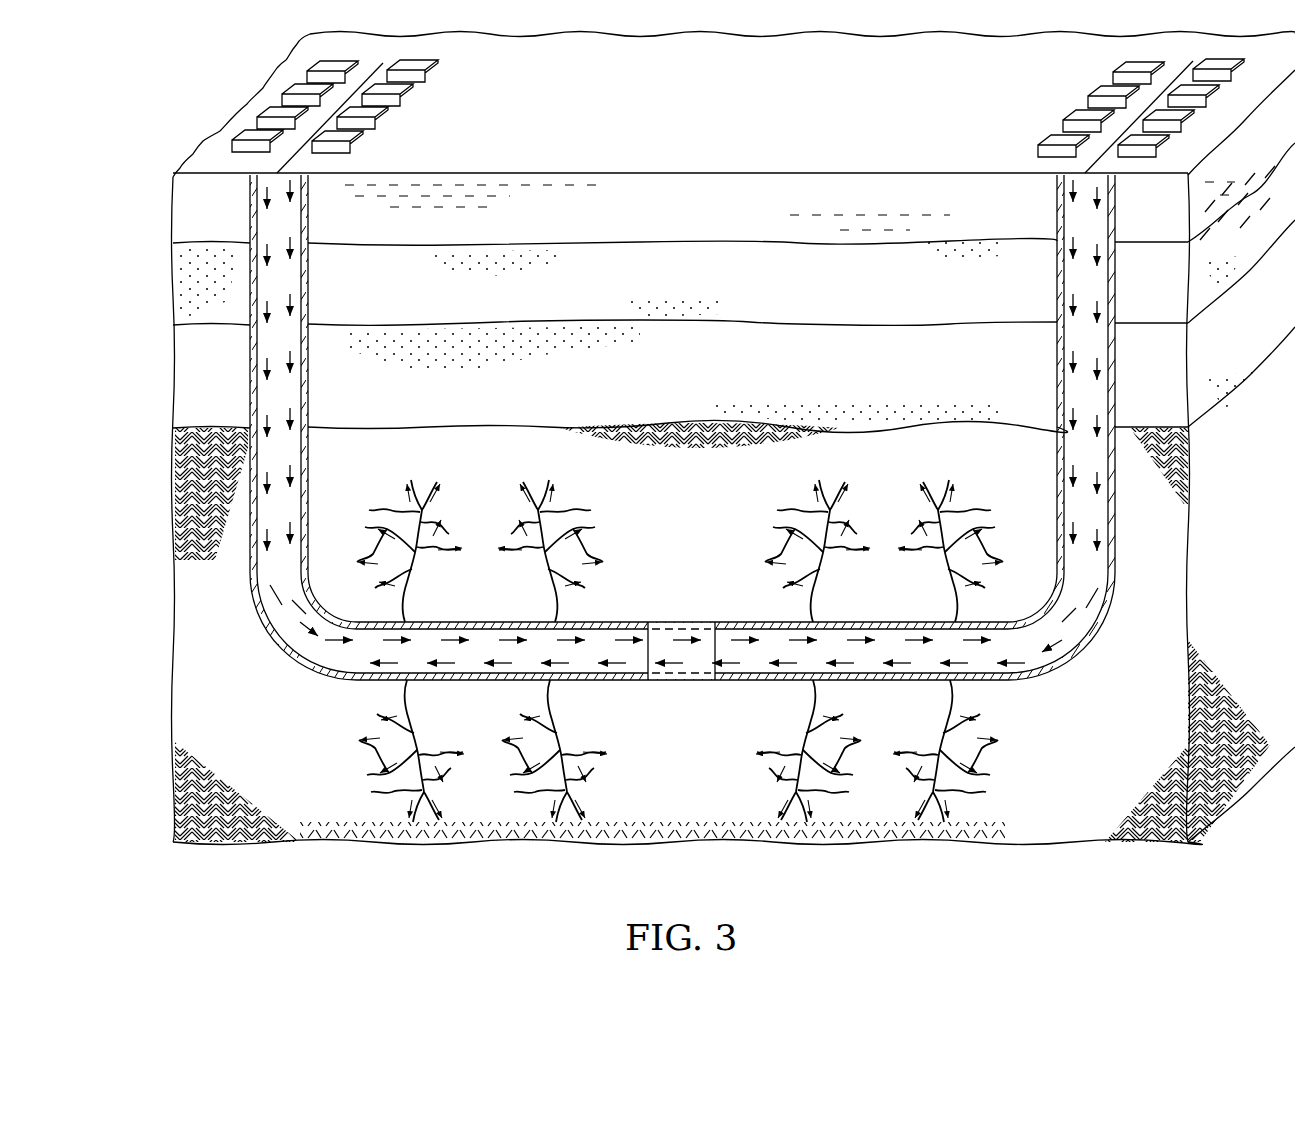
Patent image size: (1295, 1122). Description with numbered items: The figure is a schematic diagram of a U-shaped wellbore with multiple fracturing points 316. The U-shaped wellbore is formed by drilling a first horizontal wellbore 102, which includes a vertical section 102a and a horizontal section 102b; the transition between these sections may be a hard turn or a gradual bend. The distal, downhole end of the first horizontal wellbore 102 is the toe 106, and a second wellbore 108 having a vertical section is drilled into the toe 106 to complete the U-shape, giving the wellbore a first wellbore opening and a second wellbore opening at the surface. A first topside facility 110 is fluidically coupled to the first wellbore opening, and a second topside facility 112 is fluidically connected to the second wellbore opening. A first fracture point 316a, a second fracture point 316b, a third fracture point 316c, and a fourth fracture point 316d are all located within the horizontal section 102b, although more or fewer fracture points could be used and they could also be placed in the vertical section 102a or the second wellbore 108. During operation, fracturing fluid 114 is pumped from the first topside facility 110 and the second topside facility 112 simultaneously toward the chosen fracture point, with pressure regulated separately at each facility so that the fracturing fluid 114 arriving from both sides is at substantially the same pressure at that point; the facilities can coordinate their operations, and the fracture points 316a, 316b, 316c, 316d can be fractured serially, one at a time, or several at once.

The first horizontal wellbore 102 is at (672, 463).
The vertical section 102a is at (267, 587).
The horizontal section 102b is at (465, 590).
The toe 106 is at (1085, 645).
The second wellbore 108 is at (1070, 355).
The first topside facility 110 is at (240, 140).
The second topside facility 112 is at (1048, 142).
The fracturing fluid 114 is at (296, 303).
The fracturing points 316 is at (680, 692).
The first fracture point 316a is at (468, 652).
The second fracture point 316b is at (575, 652).
The third fracture point 316c is at (811, 652).
The fourth fracture point 316d is at (926, 652).